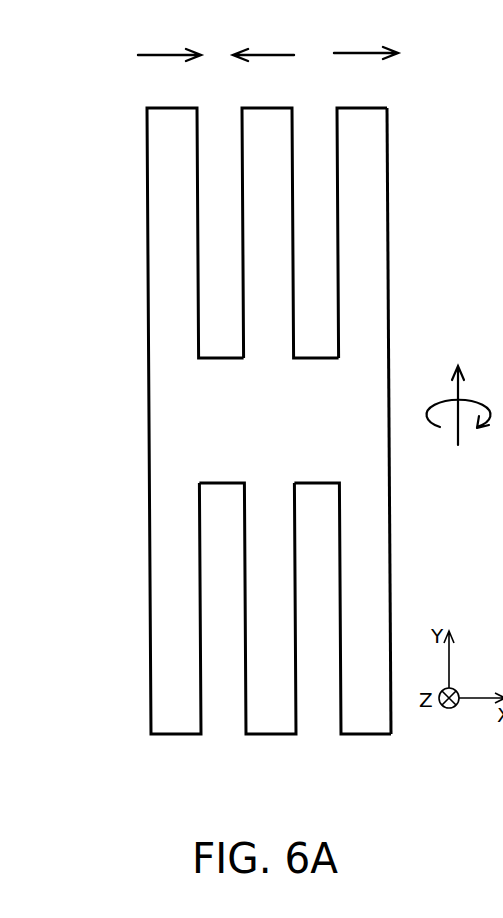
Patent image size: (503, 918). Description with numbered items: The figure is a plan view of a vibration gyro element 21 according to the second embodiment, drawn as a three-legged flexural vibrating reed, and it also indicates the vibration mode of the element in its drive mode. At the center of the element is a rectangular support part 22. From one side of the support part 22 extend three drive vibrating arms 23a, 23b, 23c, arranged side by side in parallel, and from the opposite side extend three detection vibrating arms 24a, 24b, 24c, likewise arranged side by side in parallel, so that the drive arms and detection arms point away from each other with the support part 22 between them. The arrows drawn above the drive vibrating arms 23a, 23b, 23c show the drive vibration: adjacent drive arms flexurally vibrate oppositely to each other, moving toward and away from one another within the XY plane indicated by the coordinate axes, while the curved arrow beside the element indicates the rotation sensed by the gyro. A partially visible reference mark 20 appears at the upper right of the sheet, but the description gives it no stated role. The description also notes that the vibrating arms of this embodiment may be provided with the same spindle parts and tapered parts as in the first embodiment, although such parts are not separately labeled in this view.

The resonator element 20 is at (495, 74).
The vibration gyro element 21 is at (277, 428).
The support part 22 is at (388, 388).
The drive vibrating arm 23a is at (168, 108).
The drive vibrating arm 23b is at (262, 108).
The drive vibrating arm 23c is at (357, 108).
The detection vibrating arm 24a is at (176, 734).
The detection vibrating arm 24b is at (270, 734).
The detection vibrating arm 24c is at (366, 734).